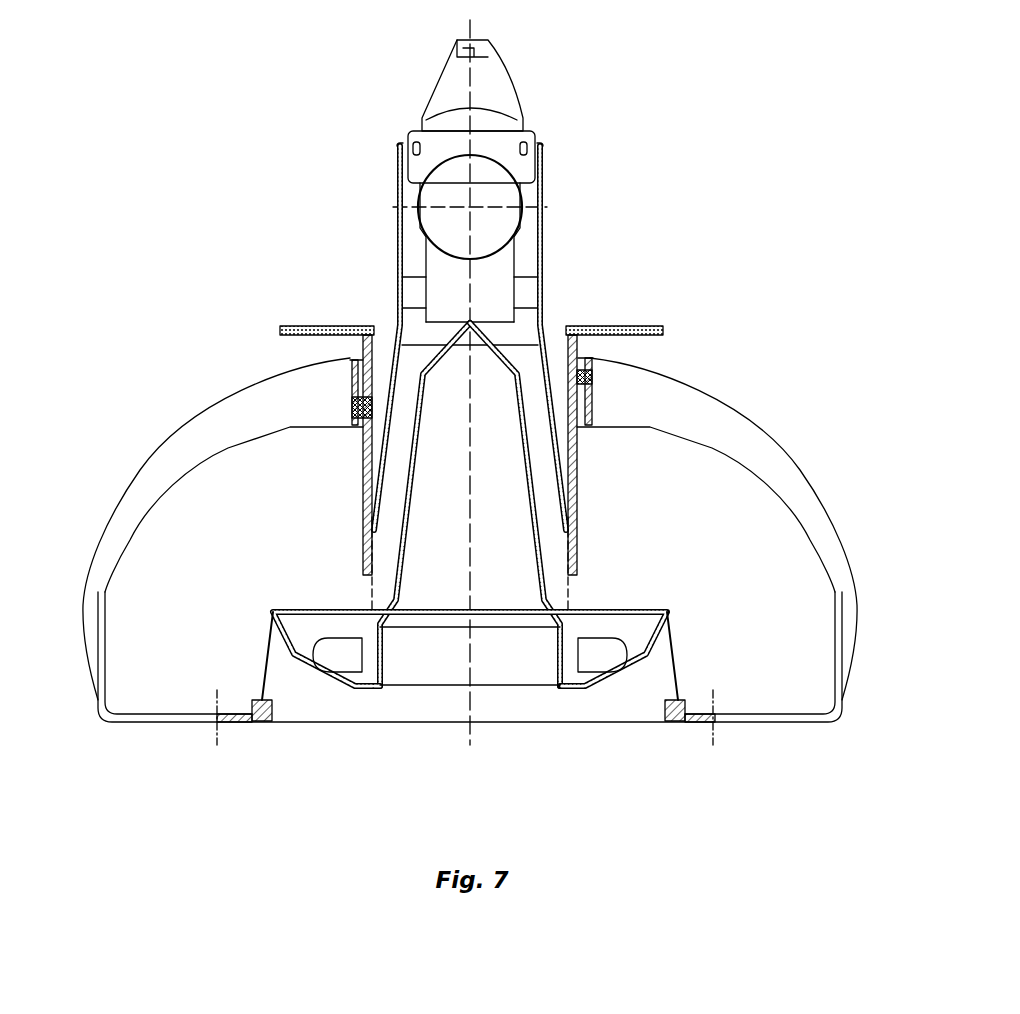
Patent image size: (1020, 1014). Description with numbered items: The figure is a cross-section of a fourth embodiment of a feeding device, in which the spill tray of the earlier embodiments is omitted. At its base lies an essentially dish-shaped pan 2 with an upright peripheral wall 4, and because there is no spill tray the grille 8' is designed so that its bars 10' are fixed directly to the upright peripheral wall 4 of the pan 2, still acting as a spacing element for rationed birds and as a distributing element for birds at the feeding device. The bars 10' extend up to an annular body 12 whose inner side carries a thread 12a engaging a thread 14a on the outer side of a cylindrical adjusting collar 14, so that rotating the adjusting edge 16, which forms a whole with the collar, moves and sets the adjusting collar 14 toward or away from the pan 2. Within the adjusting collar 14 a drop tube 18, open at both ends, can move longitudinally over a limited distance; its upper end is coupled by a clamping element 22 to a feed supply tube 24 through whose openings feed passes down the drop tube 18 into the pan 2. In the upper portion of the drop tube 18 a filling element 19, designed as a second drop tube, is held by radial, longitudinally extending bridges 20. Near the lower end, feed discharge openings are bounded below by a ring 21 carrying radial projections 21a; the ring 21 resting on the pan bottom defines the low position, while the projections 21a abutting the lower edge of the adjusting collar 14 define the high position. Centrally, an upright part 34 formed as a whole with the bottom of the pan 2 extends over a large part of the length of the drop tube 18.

The dish-shaped pan 2 is at (300, 673).
The upright peripheral wall 4 is at (262, 675).
The grille 8' is at (85, 360).
The bars 10' is at (470, 540).
The annular body 12 is at (593, 420).
The thread 12a is at (593, 378).
The cylindrical adjusting collar 14 is at (363, 490).
The thread 14a is at (350, 430).
The adjusting edge 16 is at (343, 325).
The drop tube 18 is at (545, 275).
The filling element 19 is at (519, 252).
The bridges 20 is at (415, 288).
The ring 21 is at (598, 637).
The radial projections 21a is at (612, 653).
The clamping element 22 is at (498, 82).
The feed supply tube 24 is at (418, 222).
The upright part 34 is at (541, 493).